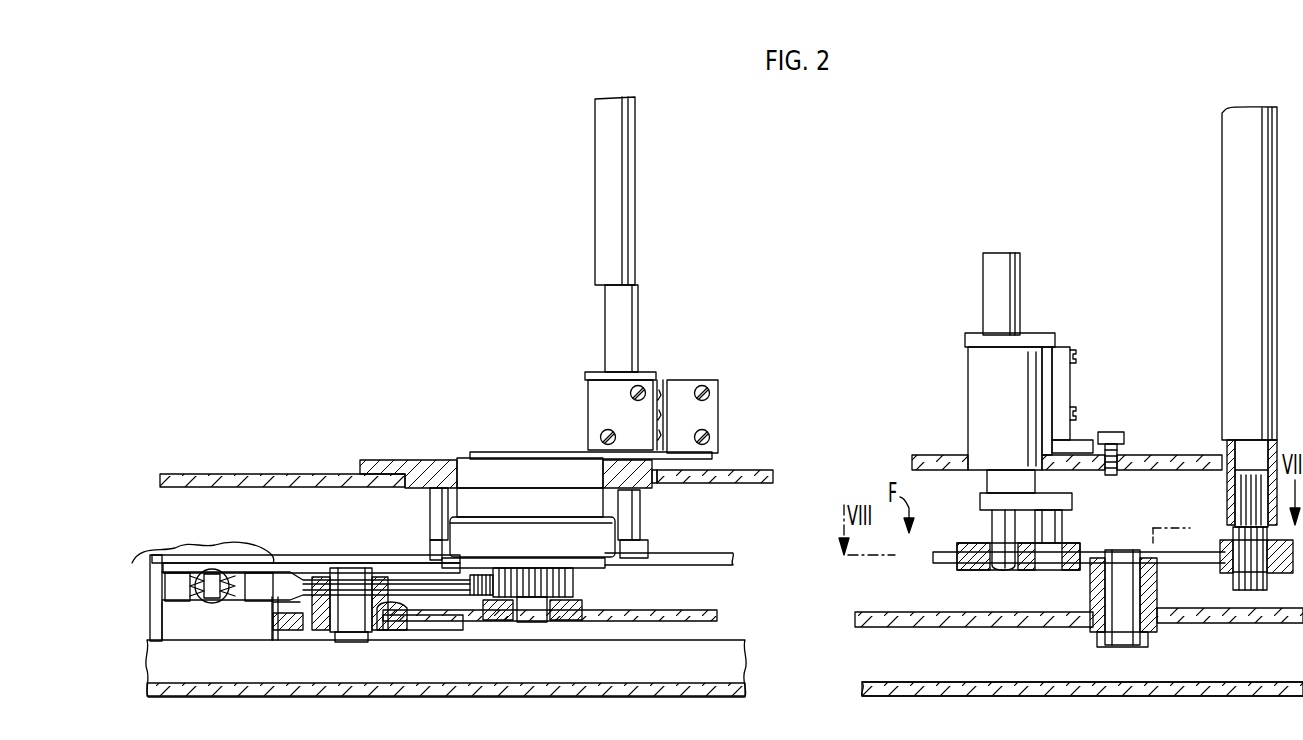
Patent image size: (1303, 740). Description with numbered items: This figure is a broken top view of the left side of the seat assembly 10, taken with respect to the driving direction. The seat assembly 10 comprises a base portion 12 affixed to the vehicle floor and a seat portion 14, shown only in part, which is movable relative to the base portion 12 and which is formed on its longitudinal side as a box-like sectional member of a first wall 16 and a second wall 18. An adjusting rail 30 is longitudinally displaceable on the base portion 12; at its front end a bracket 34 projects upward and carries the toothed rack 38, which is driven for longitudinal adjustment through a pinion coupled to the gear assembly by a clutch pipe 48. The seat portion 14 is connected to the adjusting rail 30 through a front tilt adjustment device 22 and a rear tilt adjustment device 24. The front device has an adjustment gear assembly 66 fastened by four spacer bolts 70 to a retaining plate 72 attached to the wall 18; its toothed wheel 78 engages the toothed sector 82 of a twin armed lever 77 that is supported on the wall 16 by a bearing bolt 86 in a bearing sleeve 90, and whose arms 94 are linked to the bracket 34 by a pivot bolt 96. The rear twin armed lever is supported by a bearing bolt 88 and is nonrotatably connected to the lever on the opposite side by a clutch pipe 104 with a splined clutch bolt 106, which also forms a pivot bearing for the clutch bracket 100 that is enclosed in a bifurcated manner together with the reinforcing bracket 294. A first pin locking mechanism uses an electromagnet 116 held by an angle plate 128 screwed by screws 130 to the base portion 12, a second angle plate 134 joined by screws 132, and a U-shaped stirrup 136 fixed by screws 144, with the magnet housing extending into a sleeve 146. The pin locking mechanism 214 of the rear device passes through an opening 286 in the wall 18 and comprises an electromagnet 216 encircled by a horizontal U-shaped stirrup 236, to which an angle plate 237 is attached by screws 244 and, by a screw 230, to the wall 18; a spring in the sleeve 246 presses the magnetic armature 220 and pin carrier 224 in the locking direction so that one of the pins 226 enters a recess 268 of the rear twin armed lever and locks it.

The seat assembly 10 is at (705, 185).
The base portion 12 is at (700, 686).
The seat portion 14 is at (262, 550).
The first wall 16 is at (626, 614).
The second wall 18 is at (300, 474).
The front tilt adjustment device 22 is at (450, 362).
The rear tilt adjustment device 24 is at (1130, 198).
The adjusting rail 30 is at (278, 638).
The bracket 34 is at (196, 600).
The toothed rack 38 is at (716, 556).
The clutch pipe 48 is at (636, 224).
The adjustment gear assembly 66 is at (616, 530).
The spacer bolts 70 is at (430, 506).
The retaining plate 72 is at (388, 461).
The twin armed lever 77 is at (292, 572).
The toothed wheel 78 is at (572, 584).
The toothed sector 82 is at (483, 600).
The bearing bolt 86 is at (351, 588).
The bearing bolt 88 is at (1116, 618).
The bearing sleeve 90 is at (412, 612).
The arms 94 is at (266, 592).
The pivot bolt 96 is at (232, 600).
The clutch bracket 100 is at (1290, 565).
The clutch pipe 104 is at (1228, 300).
The splined clutch bolt 106 is at (1245, 578).
The electromagnet 116 is at (585, 444).
The L-shaped angle plate 128 is at (705, 418).
The screws 130 is at (710, 393).
The screws 132 is at (668, 410).
The second L-shaped angle plate 134 is at (588, 412).
The U-shaped stirrup 136 is at (598, 378).
The screws 144 is at (634, 420).
The sleeve 146 is at (639, 330).
The pin locking mechanism 214 is at (975, 330).
The electromagnet 216 is at (968, 385).
The magnetic armature 220 is at (987, 482).
The pin carrier 224 is at (1073, 501).
The pins 226 is at (1062, 527).
The screw 230 is at (1108, 436).
The U-shaped stirrup 236 is at (1040, 335).
The L-shaped angle plate 237 is at (1062, 393).
The screws 244 is at (1076, 356).
The sleeve 246 is at (1021, 300).
The recess 268 is at (1022, 572).
The opening 286 is at (952, 456).
The reinforcing bracket 294 is at (1163, 568).